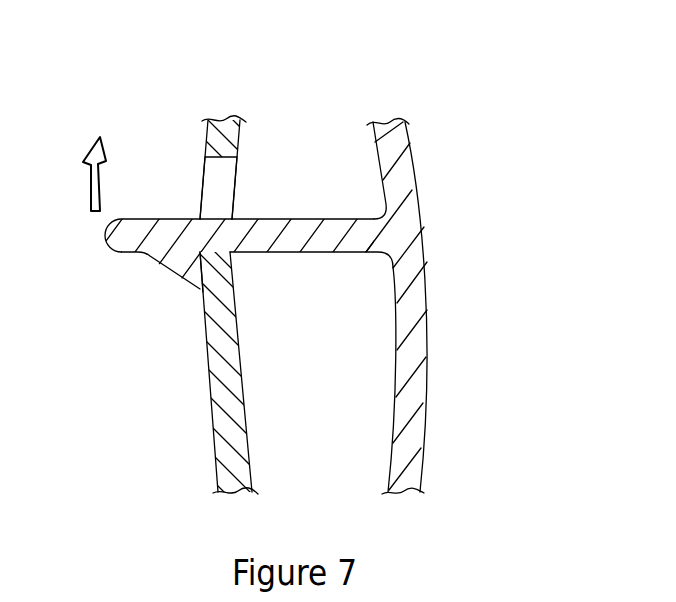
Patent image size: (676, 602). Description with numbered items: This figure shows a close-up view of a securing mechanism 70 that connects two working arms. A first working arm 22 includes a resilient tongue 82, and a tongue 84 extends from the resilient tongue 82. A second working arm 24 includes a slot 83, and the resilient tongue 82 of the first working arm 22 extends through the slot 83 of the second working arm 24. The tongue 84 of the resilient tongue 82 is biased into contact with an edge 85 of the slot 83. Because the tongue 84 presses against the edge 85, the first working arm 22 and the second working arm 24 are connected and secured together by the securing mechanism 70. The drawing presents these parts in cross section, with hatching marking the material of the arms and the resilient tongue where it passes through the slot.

The connector assembly 70 is at (344, 78).
The first working arm 22 is at (415, 167).
The second working arm 24 is at (207, 138).
The resilient tongue 82 is at (121, 253).
The slot 83 is at (218, 192).
The tongue 84 is at (182, 277).
The edge 85 is at (200, 273).